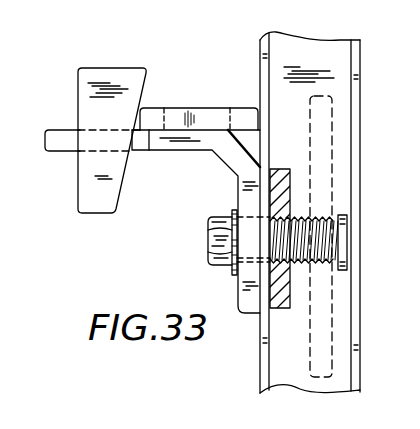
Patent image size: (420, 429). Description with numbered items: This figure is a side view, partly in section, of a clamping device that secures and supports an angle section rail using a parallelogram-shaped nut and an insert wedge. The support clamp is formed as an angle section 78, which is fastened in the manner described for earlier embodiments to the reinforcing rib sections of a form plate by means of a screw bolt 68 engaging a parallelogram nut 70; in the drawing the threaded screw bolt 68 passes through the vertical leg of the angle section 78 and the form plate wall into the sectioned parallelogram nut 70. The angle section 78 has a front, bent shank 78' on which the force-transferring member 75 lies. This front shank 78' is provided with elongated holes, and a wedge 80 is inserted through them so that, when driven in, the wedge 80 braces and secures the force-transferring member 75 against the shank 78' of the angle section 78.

The screw bolt 68 is at (208, 243).
The parallelogram nut 70 is at (282, 169).
The force-transferring member 75 is at (205, 118).
The angle section 78 is at (196, 221).
The front shank 78' is at (145, 164).
The wedge 80 is at (133, 75).